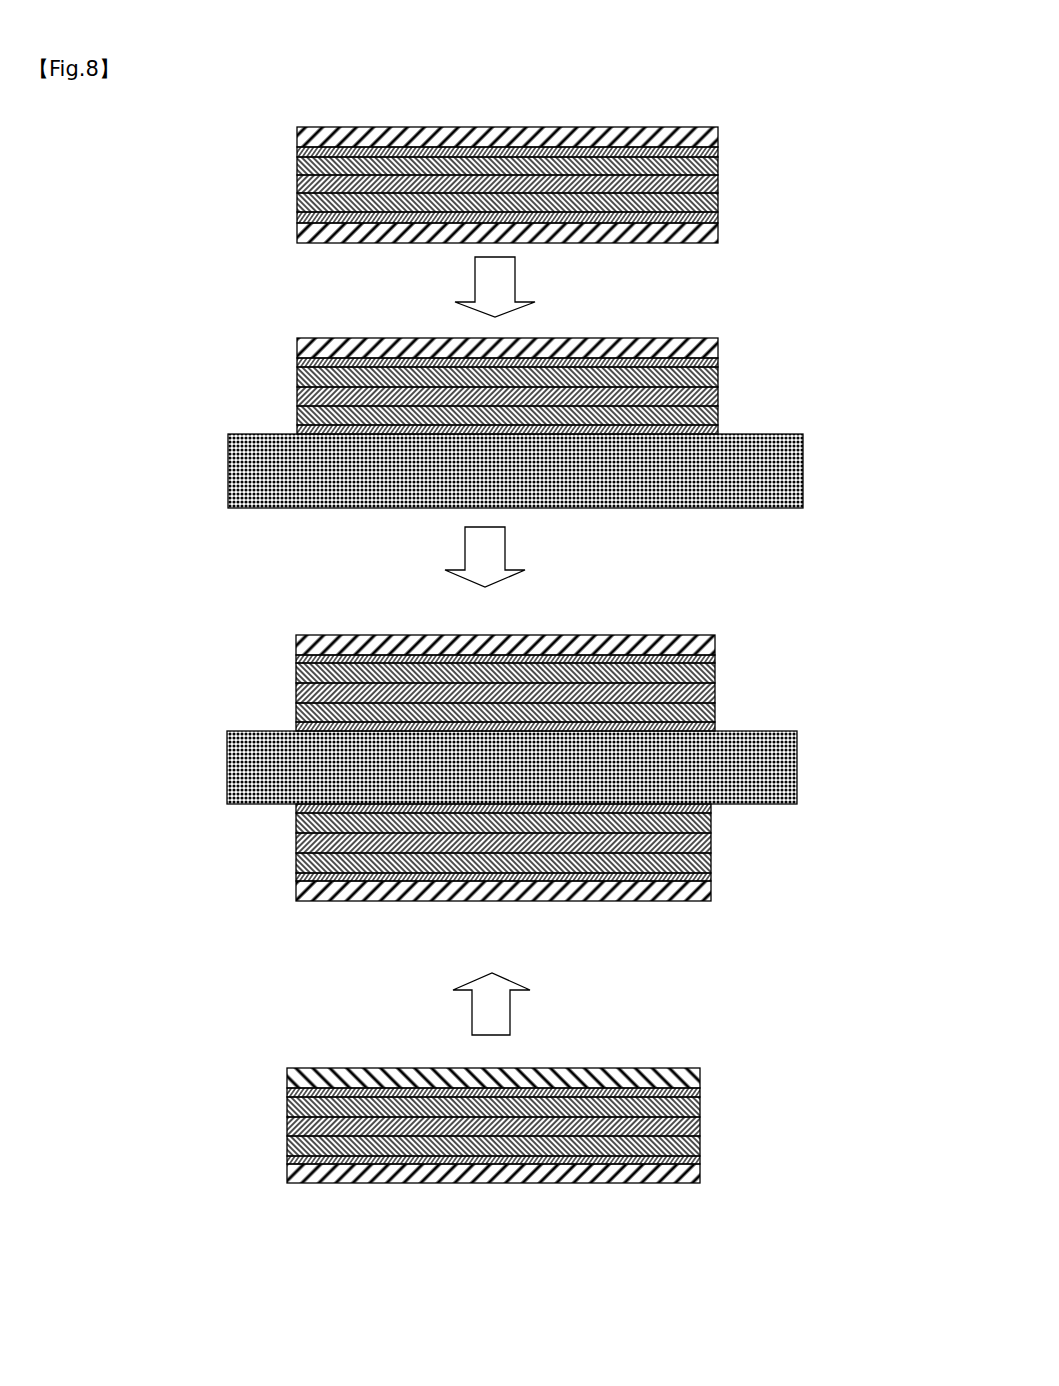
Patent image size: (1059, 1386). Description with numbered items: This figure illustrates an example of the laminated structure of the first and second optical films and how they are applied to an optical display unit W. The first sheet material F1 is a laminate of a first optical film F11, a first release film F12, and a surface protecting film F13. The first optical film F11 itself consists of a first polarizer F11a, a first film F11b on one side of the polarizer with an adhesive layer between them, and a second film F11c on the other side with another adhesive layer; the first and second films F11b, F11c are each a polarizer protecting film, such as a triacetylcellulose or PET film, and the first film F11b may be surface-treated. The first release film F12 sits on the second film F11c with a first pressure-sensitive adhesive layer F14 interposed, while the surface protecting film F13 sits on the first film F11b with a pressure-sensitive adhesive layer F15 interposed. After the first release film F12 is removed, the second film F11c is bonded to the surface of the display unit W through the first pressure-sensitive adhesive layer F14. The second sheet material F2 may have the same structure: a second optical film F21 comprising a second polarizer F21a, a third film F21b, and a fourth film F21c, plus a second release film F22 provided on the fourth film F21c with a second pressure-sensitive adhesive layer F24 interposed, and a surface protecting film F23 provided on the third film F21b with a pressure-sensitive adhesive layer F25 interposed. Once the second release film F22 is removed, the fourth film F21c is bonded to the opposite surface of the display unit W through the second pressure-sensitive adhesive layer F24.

The first sheet material F1 is at (325, 112).
The first optical film F11 is at (160, 122).
The first polarizer F11a is at (297, 186).
The first film F11b is at (297, 166).
The second film F11c is at (297, 205).
The first release film F12 is at (718, 233).
The surface protecting film F13 is at (718, 138).
The first pressure-sensitive adhesive layer F14 is at (297, 218).
The pressure-sensitive adhesive layer F15 is at (718, 152).
The workpiece (wafer) W is at (803, 470).
The second sheet material F2 is at (310, 930).
The second optical film F21 is at (171, 817).
The second polarizer F21a is at (296, 842).
The third film F21b is at (296, 862).
The fourth film F21c is at (296, 822).
The second release film F22 is at (700, 1078).
The surface protecting film F23 is at (711, 892).
The second pressure-sensitive adhesive layer F24 is at (711, 808).
The pressure-sensitive adhesive layer F25 is at (296, 877).